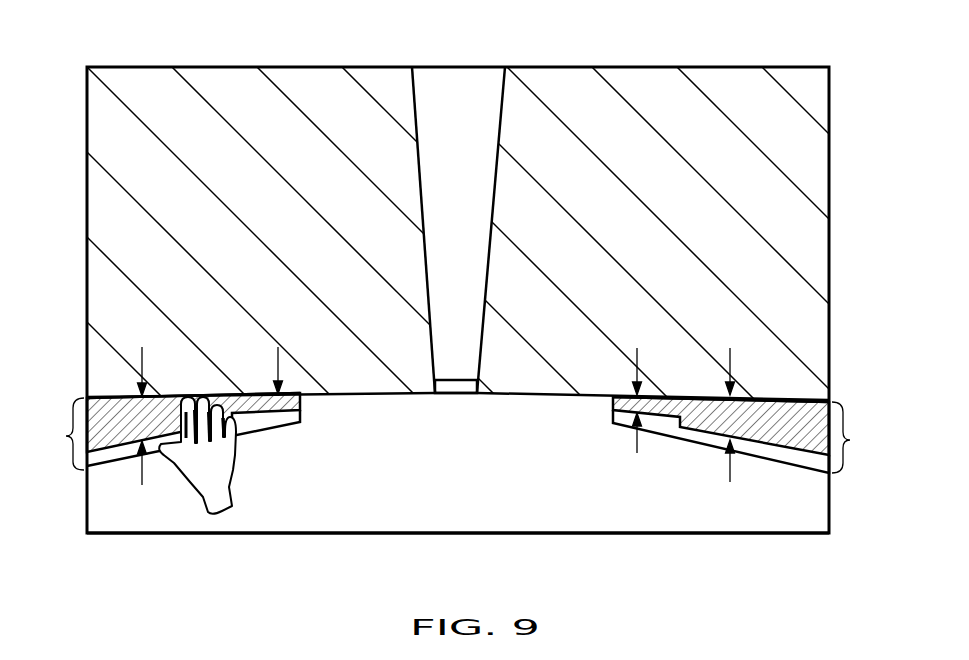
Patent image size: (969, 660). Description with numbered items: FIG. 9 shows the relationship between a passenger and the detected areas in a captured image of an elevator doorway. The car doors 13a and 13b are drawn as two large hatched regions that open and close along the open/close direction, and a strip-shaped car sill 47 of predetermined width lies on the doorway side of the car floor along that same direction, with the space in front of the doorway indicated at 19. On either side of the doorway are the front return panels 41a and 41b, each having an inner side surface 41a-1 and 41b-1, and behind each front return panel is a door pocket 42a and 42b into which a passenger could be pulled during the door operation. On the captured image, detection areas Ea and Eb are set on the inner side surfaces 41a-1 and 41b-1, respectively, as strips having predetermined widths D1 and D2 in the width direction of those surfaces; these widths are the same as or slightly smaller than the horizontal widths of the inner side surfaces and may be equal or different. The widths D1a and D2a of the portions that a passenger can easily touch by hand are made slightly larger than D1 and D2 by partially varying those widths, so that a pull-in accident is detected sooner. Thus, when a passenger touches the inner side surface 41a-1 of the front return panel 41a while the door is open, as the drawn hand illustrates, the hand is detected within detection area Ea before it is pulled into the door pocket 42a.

The car door 13a is at (249, 82).
The car door 13b is at (650, 84).
The car 19 is at (552, 503).
The front return panel 41a is at (156, 431).
The inner side surface 41a-1 is at (277, 413).
The front return panel 41b is at (754, 435).
The inner side surface 41b-1 is at (662, 425).
The door pocket 42a is at (113, 397).
The door pocket 42b is at (800, 398).
The car sill 47 is at (459, 386).
The width D1 is at (279, 366).
The width D1a is at (143, 366).
The width D2 is at (638, 367).
The width D2a is at (731, 367).
The detection area Ea is at (114, 450).
The detection area Eb is at (792, 452).